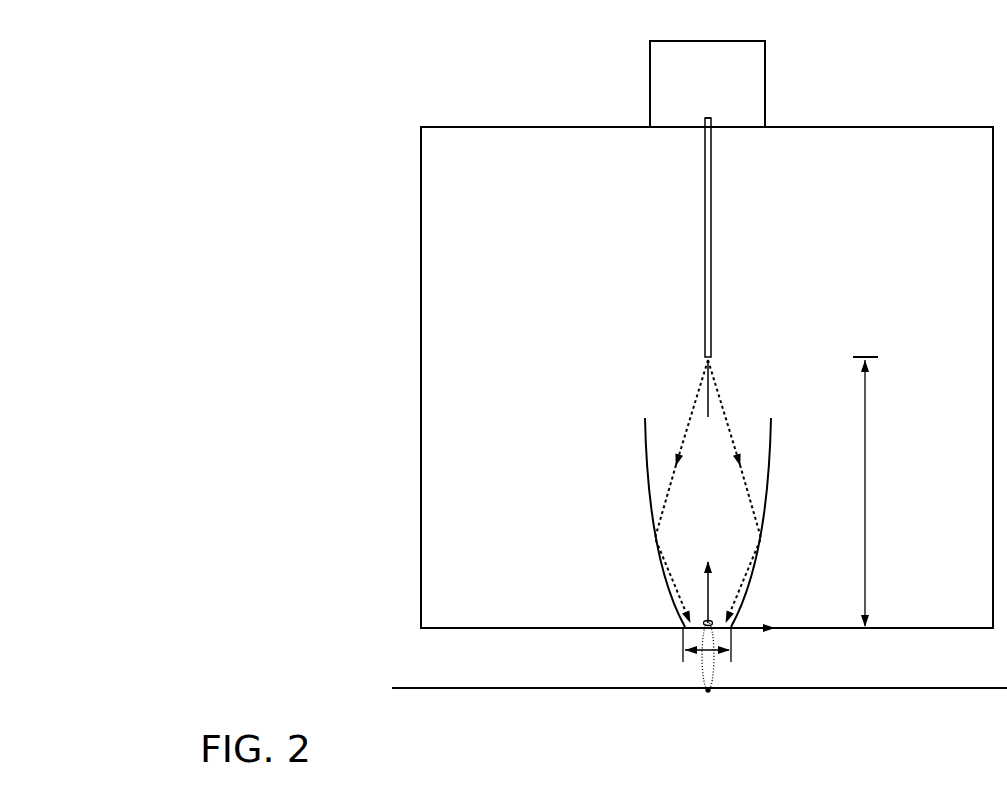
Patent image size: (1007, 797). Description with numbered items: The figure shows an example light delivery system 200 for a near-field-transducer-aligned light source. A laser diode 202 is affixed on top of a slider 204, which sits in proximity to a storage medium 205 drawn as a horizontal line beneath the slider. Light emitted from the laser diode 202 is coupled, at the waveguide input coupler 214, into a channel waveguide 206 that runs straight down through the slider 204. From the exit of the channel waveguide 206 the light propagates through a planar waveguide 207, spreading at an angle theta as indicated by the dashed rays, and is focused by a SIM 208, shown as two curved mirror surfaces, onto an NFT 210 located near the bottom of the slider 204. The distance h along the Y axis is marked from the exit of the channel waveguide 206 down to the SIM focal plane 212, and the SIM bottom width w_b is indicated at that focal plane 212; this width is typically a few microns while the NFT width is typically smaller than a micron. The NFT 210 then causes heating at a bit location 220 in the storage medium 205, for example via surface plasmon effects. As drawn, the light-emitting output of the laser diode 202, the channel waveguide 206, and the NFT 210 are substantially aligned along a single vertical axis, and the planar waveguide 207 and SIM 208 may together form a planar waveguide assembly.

The light delivery system 200 is at (290, 55).
The laser diode 202 is at (707, 84).
The slider 204 is at (707, 377).
The storage medium 205 is at (699, 718).
The channel waveguide 206 is at (705, 270).
The planar waveguide 207 is at (618, 369).
The SIM 208 is at (647, 500).
The NFT 210 is at (712, 626).
The SIM focal plane 212 is at (676, 636).
The waveguide input coupler 214 is at (692, 142).
The bit location 220 is at (714, 696).